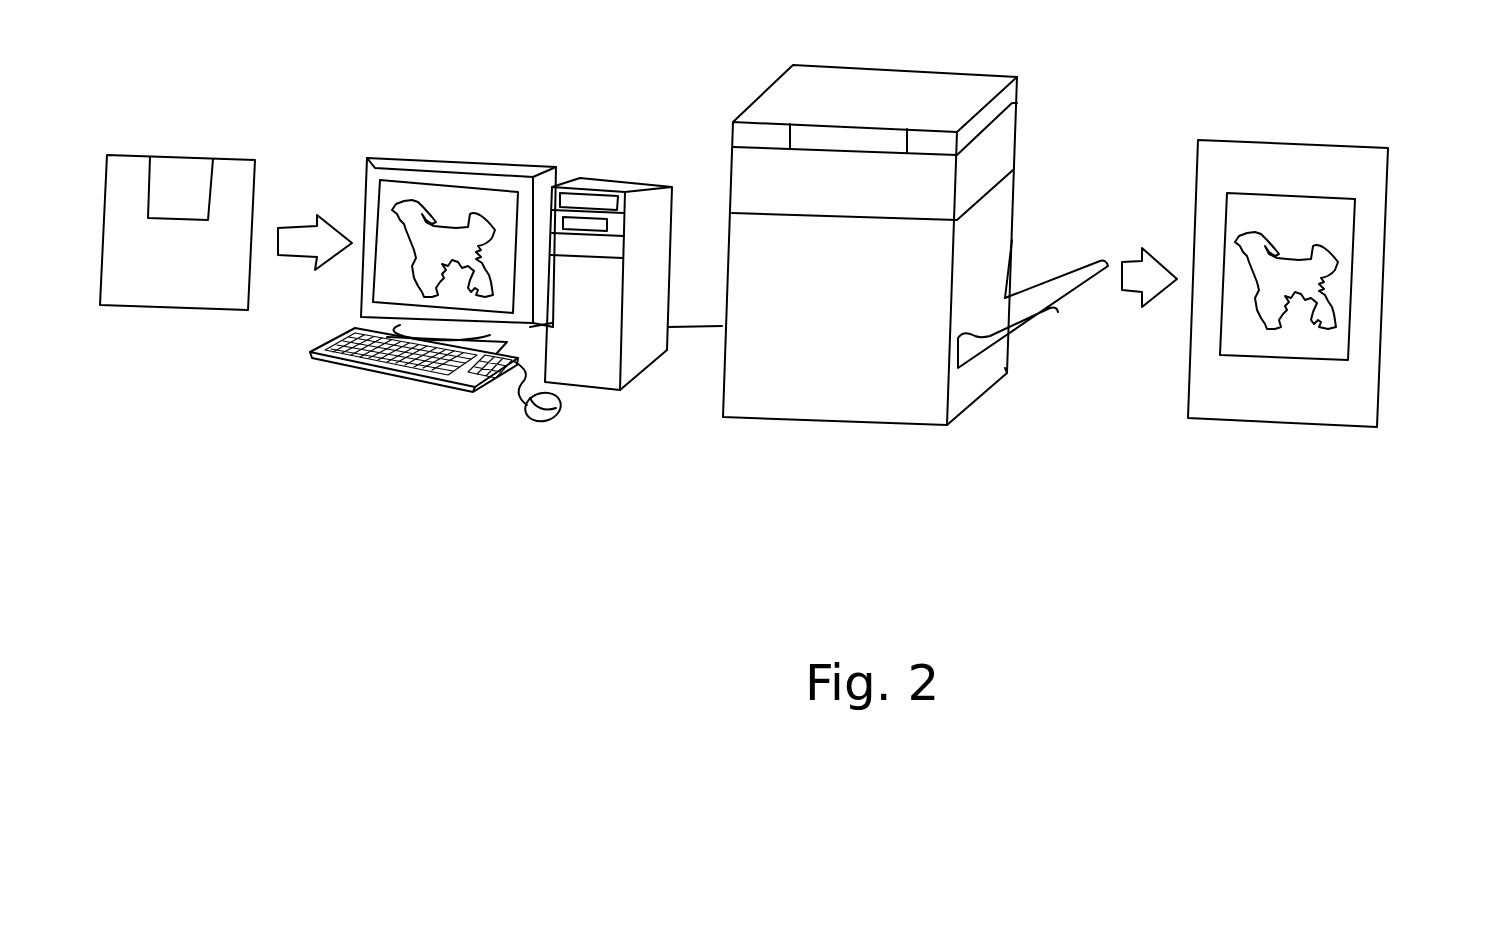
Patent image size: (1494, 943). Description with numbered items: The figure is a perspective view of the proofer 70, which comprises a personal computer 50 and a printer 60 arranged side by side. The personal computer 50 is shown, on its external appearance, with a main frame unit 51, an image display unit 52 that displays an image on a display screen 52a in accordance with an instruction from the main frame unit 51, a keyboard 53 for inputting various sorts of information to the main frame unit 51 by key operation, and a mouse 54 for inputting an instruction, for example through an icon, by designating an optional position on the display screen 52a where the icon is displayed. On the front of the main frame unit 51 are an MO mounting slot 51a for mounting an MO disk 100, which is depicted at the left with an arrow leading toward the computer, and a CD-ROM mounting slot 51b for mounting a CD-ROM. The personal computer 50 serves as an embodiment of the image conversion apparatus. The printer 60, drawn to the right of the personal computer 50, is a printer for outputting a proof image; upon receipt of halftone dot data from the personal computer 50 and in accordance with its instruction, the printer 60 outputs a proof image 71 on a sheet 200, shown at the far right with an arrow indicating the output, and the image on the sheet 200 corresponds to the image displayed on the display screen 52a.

The MO disk 100 is at (207, 296).
The personal computer 50 is at (527, 459).
The main frame unit 51 is at (630, 277).
The MO mounting slot 51a is at (597, 222).
The CD-ROM mounting slot 51b is at (583, 198).
The image display unit 52 is at (427, 157).
The display screen 52a is at (393, 200).
The keyboard 53 is at (355, 372).
The mouse 54 is at (527, 418).
The printer 60 is at (817, 422).
The proofer 70 is at (837, 532).
The sheet 200 is at (1308, 150).
The proof image 71 is at (1332, 223).